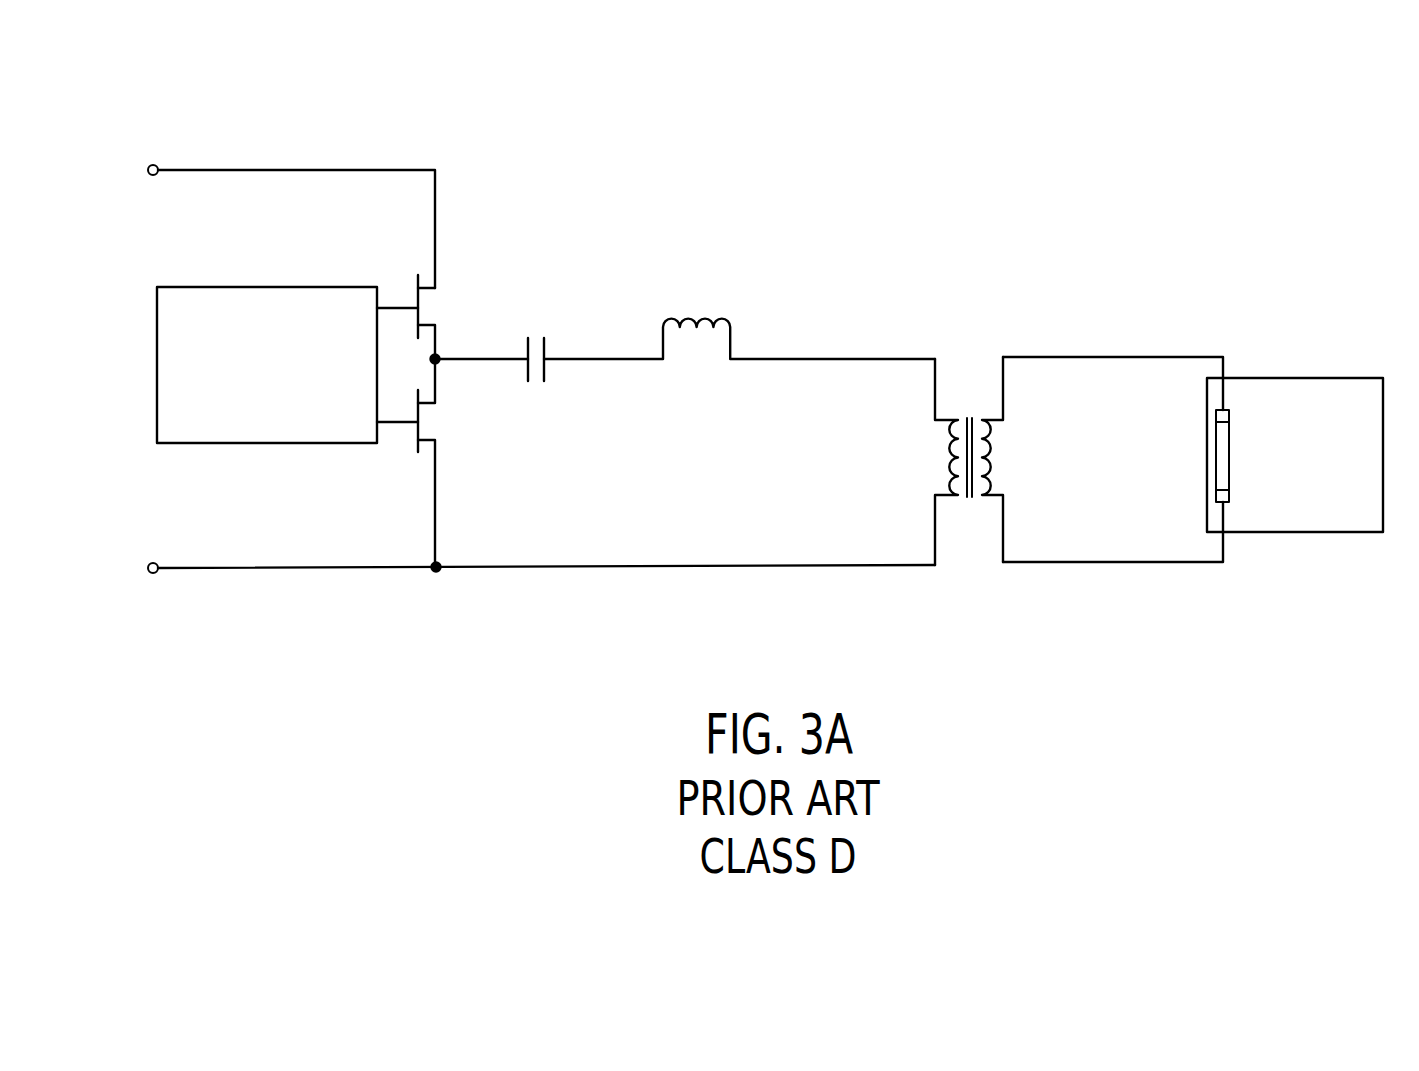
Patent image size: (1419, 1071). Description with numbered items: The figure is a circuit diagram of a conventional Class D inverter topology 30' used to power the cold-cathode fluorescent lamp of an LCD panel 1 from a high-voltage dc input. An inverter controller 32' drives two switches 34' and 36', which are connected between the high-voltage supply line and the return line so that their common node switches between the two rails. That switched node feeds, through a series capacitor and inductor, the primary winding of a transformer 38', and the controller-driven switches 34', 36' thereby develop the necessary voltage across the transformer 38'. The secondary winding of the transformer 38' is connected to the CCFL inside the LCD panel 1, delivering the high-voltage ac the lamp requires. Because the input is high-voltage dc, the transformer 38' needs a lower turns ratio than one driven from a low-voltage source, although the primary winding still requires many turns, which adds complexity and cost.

The inverter topology 30' is at (775, 299).
The inverter controller 32' is at (267, 341).
The switch 34' is at (429, 304).
The switch 36' is at (429, 463).
The transformer 38' is at (989, 461).
The LCD panel 1 is at (1360, 378).